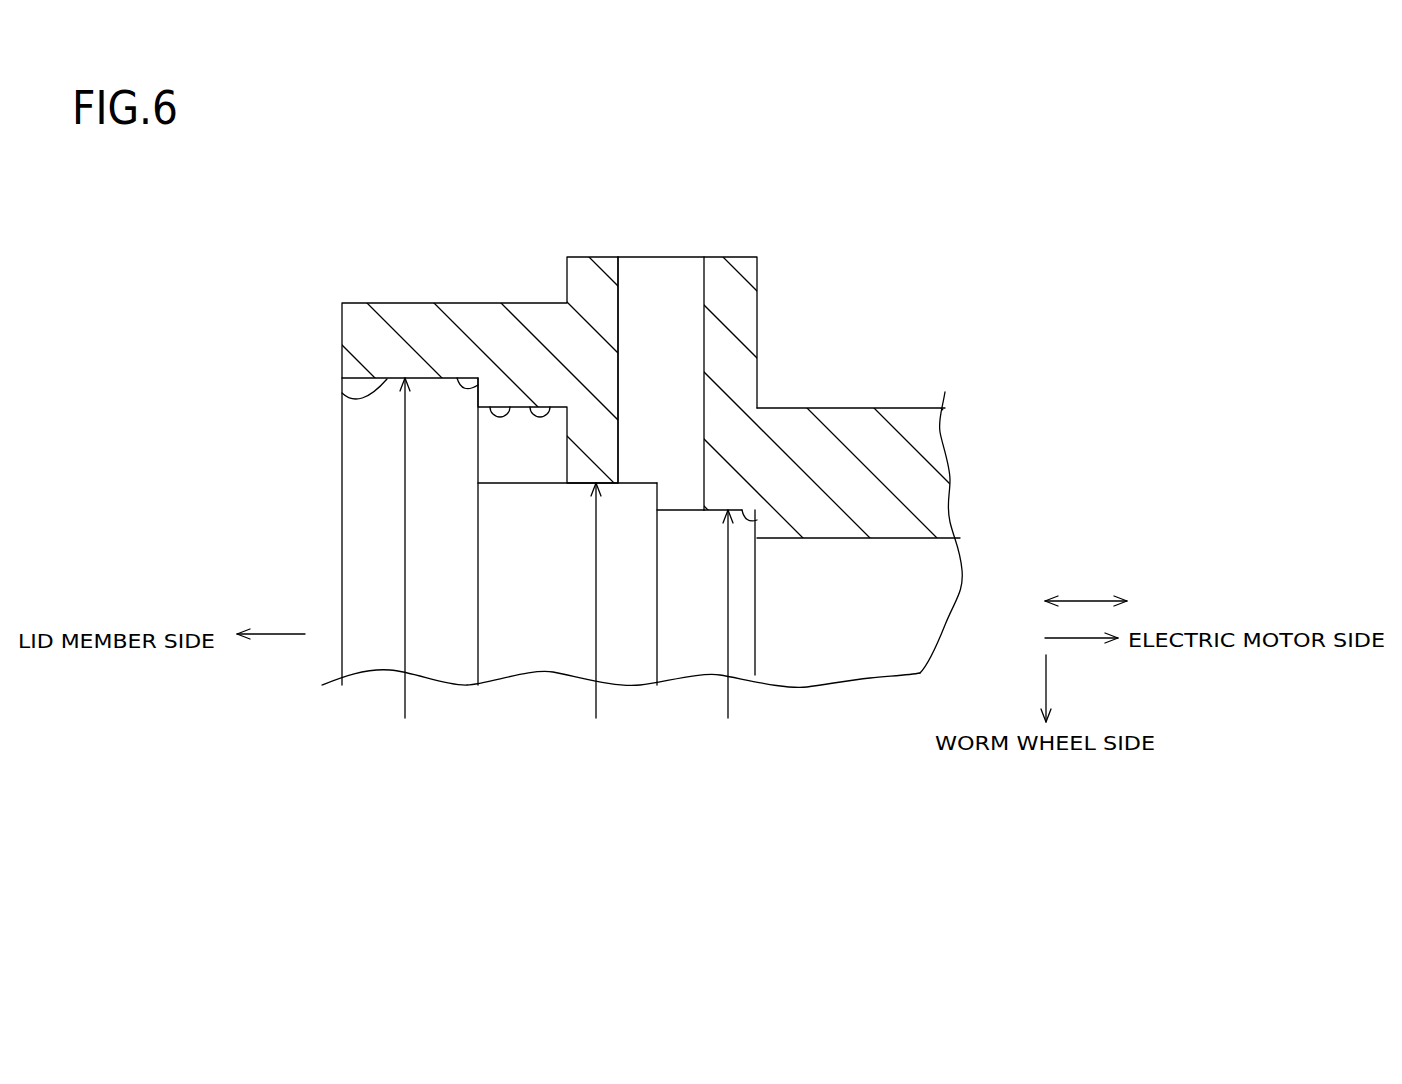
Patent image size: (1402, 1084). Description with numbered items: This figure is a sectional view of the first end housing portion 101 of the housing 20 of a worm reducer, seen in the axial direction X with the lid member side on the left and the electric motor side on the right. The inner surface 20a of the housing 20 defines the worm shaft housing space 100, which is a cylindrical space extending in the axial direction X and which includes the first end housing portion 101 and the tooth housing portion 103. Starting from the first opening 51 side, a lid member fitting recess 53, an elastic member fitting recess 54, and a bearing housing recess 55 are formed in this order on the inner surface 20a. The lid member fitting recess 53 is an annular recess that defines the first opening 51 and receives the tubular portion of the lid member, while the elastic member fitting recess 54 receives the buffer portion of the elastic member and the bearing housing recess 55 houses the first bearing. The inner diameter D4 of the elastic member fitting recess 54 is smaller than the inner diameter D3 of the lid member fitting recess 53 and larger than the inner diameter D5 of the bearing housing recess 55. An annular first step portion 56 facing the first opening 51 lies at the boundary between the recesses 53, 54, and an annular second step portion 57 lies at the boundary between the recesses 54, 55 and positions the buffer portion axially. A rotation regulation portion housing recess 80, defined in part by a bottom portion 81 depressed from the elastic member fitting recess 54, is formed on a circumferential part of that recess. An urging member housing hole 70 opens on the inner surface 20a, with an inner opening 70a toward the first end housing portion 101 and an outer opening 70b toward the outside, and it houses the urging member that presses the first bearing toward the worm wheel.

The housing 20 is at (898, 406).
The inner surface 20a is at (920, 538).
The first opening 51 is at (358, 498).
The lid member fitting recess 53 is at (342, 393).
The elastic member fitting recess 54 is at (580, 493).
The bearing housing recess 55 is at (757, 520).
The first step portion 56 is at (457, 378).
The second step portion 57 is at (657, 495).
The urging member housing hole 70 is at (704, 274).
The inner opening 70a is at (672, 498).
The outer opening 70b is at (655, 268).
The rotation regulation portion housing recess 80 is at (530, 407).
The bottom portion 81 is at (490, 407).
The worm shaft housing space 100 is at (850, 657).
The first end housing portion 101 is at (667, 523).
The tooth housing portion 103 is at (862, 558).
The inner diameter of the lid member fitting recess D3 is at (403, 564).
The inner diameter of the elastic member fitting recess D4 is at (594, 616).
The inner diameter of the bearing housing recess D5 is at (729, 630).
The axial direction X is at (1088, 600).